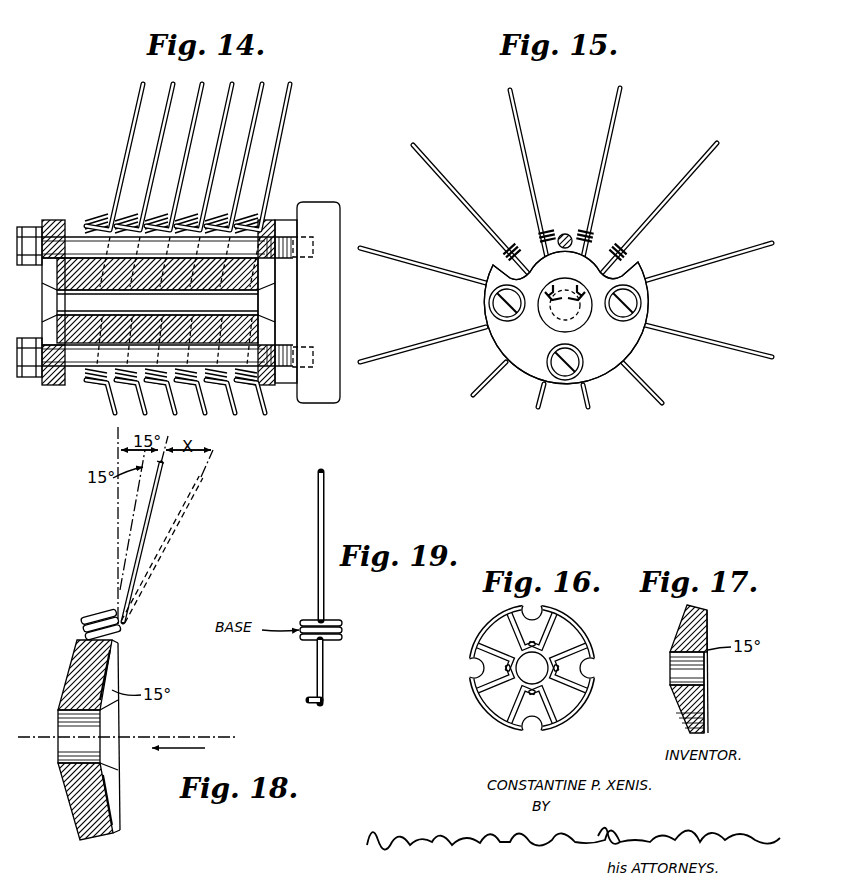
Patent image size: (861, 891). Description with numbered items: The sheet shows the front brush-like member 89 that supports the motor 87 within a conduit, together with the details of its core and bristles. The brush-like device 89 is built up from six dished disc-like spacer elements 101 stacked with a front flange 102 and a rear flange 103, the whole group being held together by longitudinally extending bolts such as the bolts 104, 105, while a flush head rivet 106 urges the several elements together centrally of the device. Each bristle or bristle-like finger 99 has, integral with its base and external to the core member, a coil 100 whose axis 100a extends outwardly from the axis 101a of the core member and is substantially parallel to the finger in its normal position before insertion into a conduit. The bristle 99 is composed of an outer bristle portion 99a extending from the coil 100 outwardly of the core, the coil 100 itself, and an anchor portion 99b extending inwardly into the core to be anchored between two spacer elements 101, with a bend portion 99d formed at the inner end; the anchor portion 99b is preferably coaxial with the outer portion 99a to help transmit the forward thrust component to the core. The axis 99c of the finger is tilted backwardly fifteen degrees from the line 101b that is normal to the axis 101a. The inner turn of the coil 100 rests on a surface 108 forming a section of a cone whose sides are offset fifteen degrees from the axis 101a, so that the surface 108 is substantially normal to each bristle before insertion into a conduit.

In FIG. 14, the motor 87 is at (335, 185).
In FIG. 14, the front brush-like member 89 is at (82, 152).
In FIG. 18, the bristle 99 is at (145, 538).
In FIG. 19, the outer bristle portion 99a is at (318, 548).
In FIG. 18, the outer bristle portion 99a is at (152, 529).
In FIG. 19, the anchor portion 99b is at (325, 677).
In FIG. 18, the anchor portion 99b is at (110, 668).
In FIG. 18, the axis of the finger 99c is at (220, 478).
In FIG. 19, the bend portion 99d is at (310, 702).
In FIG. 14, the coil 100 is at (87, 220).
In FIG. 19, the coil 100 is at (342, 625).
In FIG. 18, the coil 100 is at (83, 622).
In FIG. 18, the axis of the coil 100a is at (113, 580).
In FIG. 14, the spacer element 101 is at (100, 290).
In FIG. 17, the spacer element 101 is at (670, 635).
In FIG. 18, the spacer element 101 is at (68, 668).
In FIG. 18, the axis of the core member 101a is at (125, 737).
In FIG. 18, the normal to the axis 101b is at (117, 452).
In FIG. 14, the front flange 102 is at (53, 218).
In FIG. 14, the rear flange 103 is at (260, 237).
In FIG. 14, the bolt 104 is at (318, 238).
In FIG. 14, the bolt 105 is at (318, 370).
In FIG. 14, the flush head rivet 106 is at (265, 305).
In FIG. 18, the surface 108 is at (75, 650).